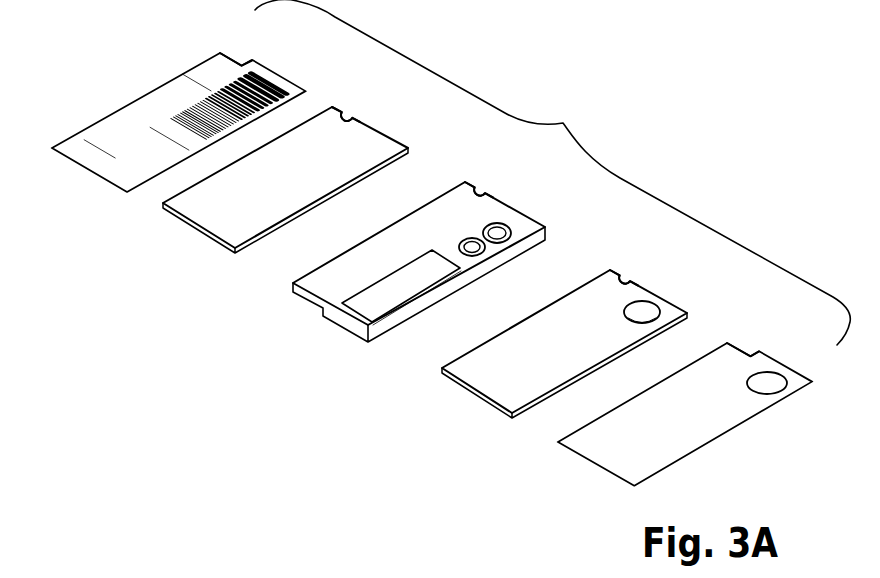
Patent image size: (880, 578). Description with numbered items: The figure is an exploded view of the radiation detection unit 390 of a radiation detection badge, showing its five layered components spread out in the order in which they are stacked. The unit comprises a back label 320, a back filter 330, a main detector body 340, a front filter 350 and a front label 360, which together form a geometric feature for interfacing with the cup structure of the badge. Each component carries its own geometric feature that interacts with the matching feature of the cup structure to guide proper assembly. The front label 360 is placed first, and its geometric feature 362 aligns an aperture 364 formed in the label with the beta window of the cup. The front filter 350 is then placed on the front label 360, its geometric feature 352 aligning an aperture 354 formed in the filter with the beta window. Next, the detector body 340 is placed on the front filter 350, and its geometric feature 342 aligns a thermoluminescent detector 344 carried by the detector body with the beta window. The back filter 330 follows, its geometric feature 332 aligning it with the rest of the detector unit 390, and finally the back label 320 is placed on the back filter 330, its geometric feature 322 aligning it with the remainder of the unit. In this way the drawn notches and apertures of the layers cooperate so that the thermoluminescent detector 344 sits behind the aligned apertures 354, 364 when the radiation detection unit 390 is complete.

The back label 320 is at (88, 162).
The geometric feature of the back label 322 is at (241, 64).
The back filter 330 is at (210, 242).
The geometric feature of the back filter 332 is at (346, 115).
The main detector body 340 is at (350, 320).
The geometric feature of the detector body 342 is at (485, 192).
The thermoluminescent detector 344 is at (478, 253).
The front filter 350 is at (488, 410).
The geometric feature of the front filter 352 is at (626, 278).
The aperture of the front filter 354 is at (643, 311).
The front label 360 is at (595, 455).
The geometric feature of the front label 362 is at (745, 353).
The aperture of the front label 364 is at (768, 388).
The radiation detection unit 390 is at (552, 172).